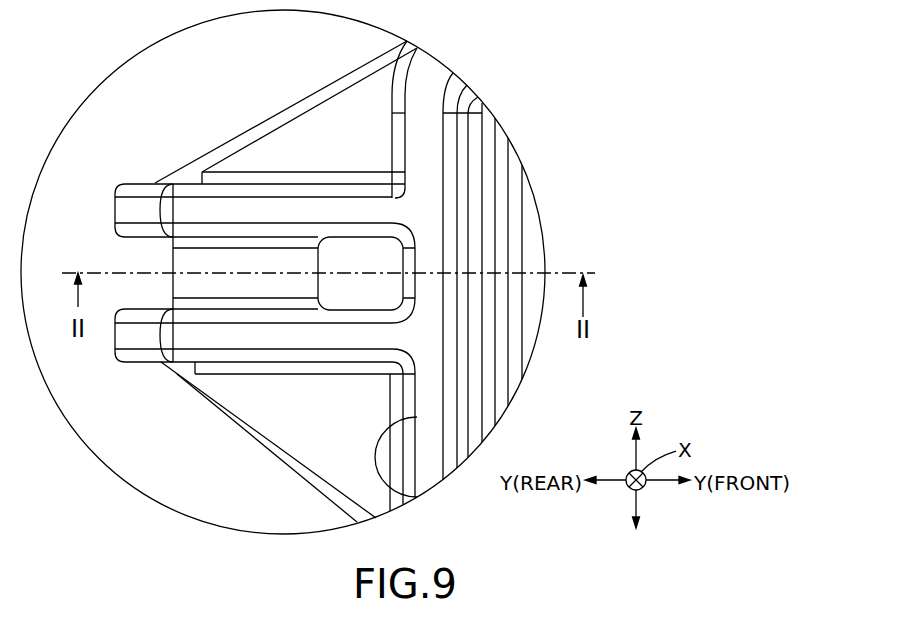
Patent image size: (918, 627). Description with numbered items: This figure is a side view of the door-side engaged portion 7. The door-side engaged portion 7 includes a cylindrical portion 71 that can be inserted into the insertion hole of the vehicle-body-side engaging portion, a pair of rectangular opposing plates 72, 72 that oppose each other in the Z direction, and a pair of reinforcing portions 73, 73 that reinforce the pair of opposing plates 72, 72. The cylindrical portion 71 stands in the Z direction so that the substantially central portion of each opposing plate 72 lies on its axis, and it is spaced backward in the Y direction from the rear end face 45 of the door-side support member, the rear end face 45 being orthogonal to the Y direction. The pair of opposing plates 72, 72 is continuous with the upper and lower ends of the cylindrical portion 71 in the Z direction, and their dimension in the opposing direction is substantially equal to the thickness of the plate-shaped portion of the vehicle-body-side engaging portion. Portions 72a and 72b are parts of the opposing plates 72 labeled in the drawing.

The door-side engaged portion 7 is at (174, 378).
The cylindrical portion 71 is at (183, 261).
The opposing plate 72 is at (117, 191).
The base portion of arm 72a is at (116, 221).
The tip portion of arm 72b is at (142, 211).
The reinforcing portion 73 is at (298, 130).
The rear end face 45 is at (418, 496).